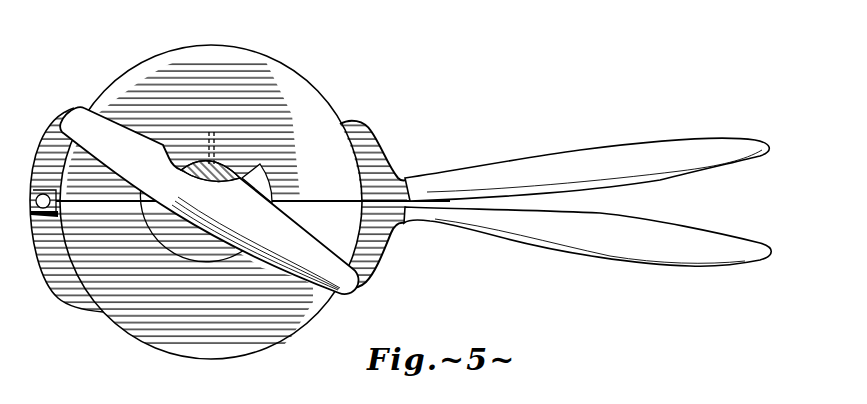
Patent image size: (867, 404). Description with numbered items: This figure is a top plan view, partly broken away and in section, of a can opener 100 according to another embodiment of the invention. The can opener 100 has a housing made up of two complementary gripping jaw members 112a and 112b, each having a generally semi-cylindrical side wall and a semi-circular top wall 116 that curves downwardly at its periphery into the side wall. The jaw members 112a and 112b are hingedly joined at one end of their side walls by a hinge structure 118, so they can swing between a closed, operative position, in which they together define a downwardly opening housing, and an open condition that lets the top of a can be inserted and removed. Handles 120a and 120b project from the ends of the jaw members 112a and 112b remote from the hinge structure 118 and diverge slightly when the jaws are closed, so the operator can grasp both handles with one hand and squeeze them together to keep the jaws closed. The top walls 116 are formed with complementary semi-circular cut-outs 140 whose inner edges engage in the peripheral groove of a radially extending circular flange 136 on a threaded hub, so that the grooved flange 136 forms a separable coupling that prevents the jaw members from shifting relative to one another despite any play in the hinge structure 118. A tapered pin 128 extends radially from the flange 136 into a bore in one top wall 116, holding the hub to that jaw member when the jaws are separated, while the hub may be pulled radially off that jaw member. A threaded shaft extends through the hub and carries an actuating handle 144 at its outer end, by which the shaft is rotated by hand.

The can opener 100 is at (372, 96).
The gripping jaw member 112a is at (343, 37).
The gripping jaw member 112b is at (136, 344).
The top wall 116 is at (309, 98).
The hinge structure 118 is at (45, 258).
The handle 120a is at (618, 129).
The handle 120b is at (599, 247).
The tapered pin 128 is at (214, 140).
The circular flange 136 is at (266, 184).
The cut-out 140 is at (226, 165).
The actuating handle 144 is at (84, 122).